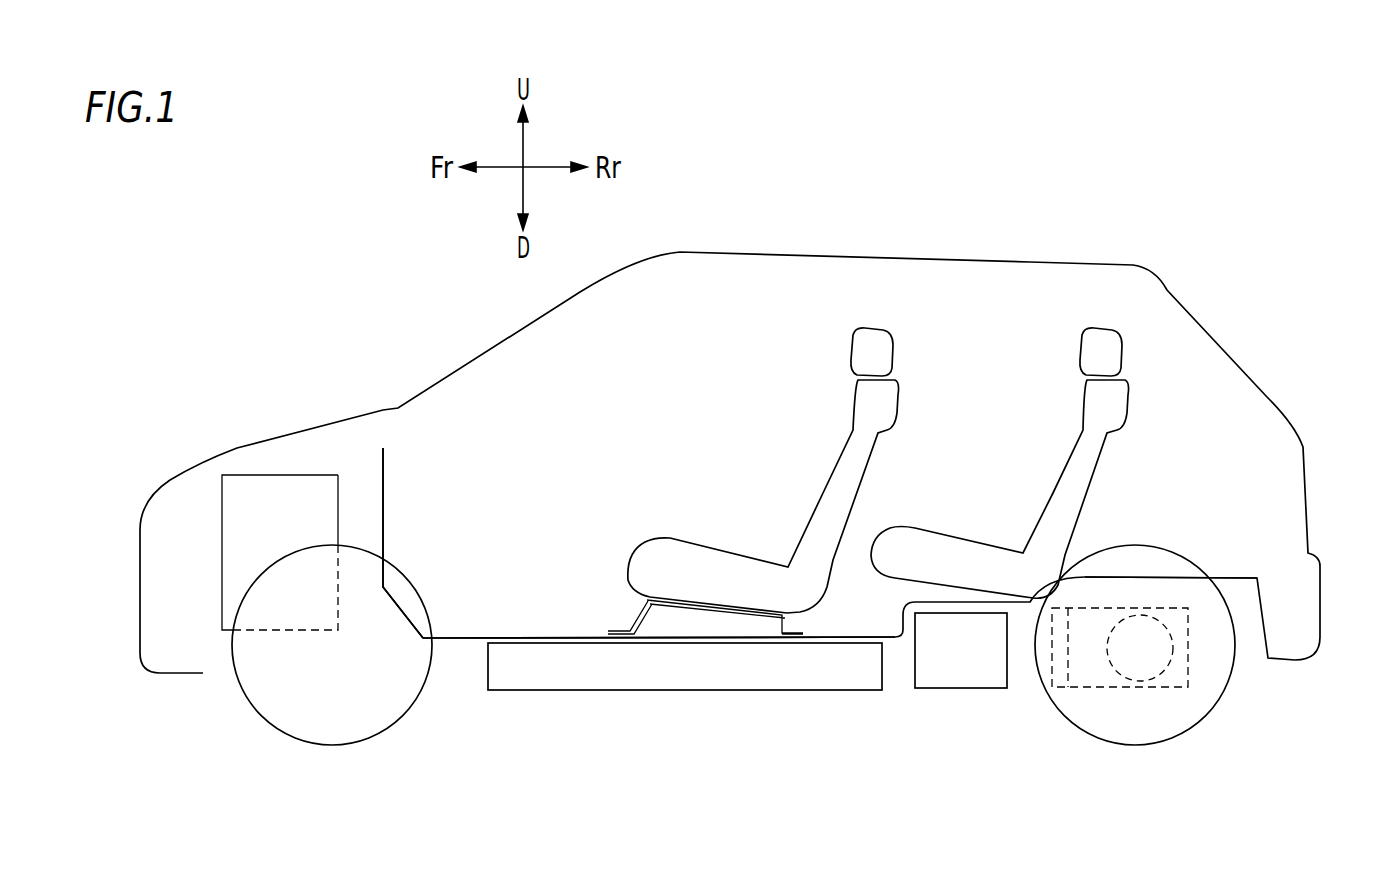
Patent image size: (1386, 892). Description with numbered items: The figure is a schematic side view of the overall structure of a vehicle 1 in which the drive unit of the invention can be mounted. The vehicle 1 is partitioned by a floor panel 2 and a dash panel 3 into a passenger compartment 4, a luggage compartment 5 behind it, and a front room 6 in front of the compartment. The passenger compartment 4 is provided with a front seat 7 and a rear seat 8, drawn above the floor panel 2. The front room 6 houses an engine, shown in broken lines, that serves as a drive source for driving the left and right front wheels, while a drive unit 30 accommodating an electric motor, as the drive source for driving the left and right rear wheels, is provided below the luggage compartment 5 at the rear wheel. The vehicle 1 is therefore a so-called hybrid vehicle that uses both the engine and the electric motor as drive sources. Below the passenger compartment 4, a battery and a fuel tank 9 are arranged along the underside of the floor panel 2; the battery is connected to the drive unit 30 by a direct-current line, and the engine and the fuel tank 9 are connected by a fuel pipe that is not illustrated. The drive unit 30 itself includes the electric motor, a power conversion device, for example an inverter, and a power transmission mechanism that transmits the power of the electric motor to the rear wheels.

The vehicle 1 is at (402, 266).
The floor panel 2 is at (488, 637).
The dash panel 3 is at (386, 482).
The passenger compartment 4 is at (606, 427).
The luggage compartment 5 is at (1213, 442).
The front room 6 is at (192, 550).
The front seat 7 is at (833, 458).
The rear seat 8 is at (1063, 450).
The fuel tank 9 is at (962, 690).
The drive unit 30 is at (1200, 618).